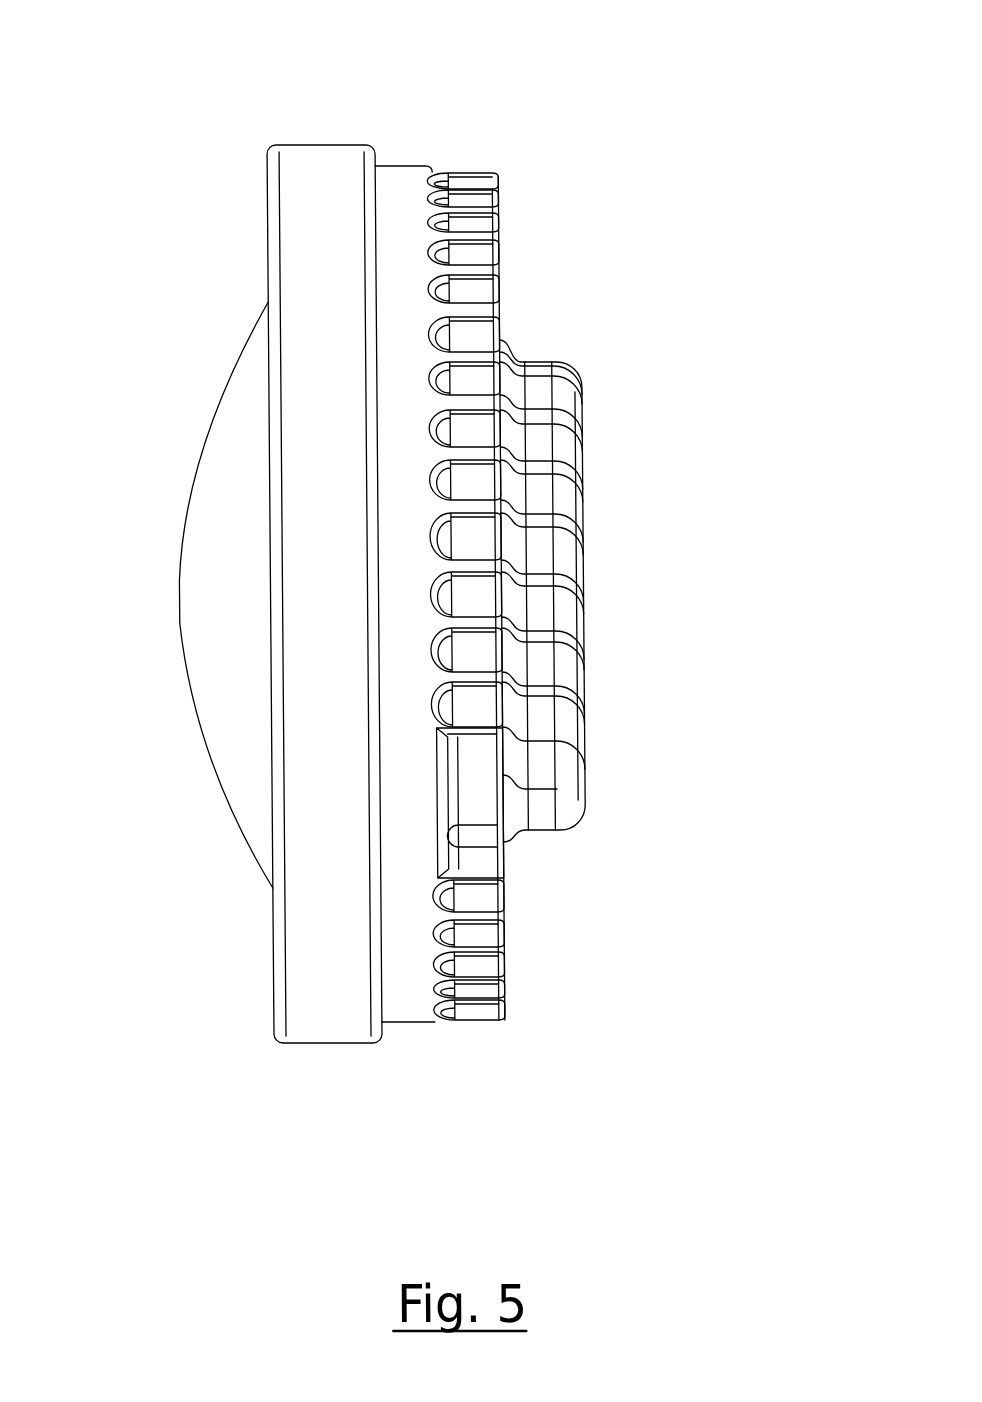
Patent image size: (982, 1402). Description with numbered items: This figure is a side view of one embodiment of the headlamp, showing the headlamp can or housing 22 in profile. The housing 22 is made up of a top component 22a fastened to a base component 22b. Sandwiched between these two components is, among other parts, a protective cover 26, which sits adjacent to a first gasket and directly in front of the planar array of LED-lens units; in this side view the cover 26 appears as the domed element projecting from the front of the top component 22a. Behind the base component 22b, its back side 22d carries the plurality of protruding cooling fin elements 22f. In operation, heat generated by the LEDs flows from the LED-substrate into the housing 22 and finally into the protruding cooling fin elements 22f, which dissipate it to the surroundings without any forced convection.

The housing 22 is at (453, 623).
The top component 22a is at (296, 146).
The base component 22b is at (400, 167).
The back side 22d is at (579, 713).
The protruding cooling fin elements 22f is at (507, 180).
The protective cover 26 is at (176, 623).